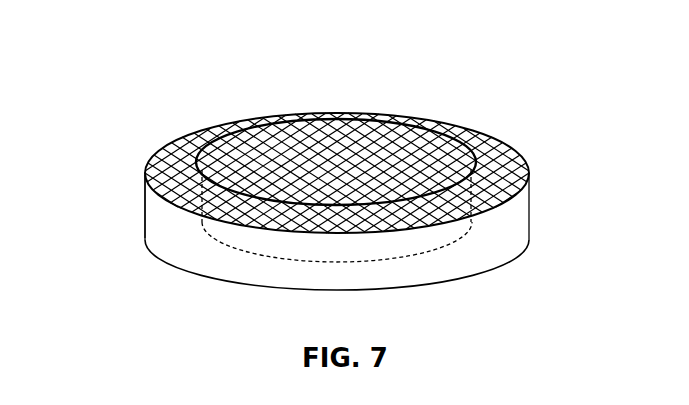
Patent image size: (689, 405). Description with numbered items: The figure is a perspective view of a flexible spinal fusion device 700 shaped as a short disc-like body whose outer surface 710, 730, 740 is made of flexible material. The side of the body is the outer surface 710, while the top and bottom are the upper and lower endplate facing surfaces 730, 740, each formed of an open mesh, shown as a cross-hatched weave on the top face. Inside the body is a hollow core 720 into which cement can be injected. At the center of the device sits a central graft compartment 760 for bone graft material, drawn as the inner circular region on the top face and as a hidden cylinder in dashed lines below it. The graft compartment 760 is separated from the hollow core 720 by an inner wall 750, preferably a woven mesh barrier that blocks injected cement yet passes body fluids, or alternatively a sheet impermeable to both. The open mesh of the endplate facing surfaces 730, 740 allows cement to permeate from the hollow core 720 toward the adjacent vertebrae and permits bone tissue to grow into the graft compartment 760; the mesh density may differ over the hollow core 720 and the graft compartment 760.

The flexible spinal fusion device 700 is at (125, 72).
The outer surface 710 is at (550, 200).
The hollow core 720 is at (157, 217).
The upper endplate facing surface 730 is at (512, 130).
The lower endplate facing surface 740 is at (411, 303).
The inner wall 750 is at (257, 242).
The central graft compartment 760 is at (355, 125).